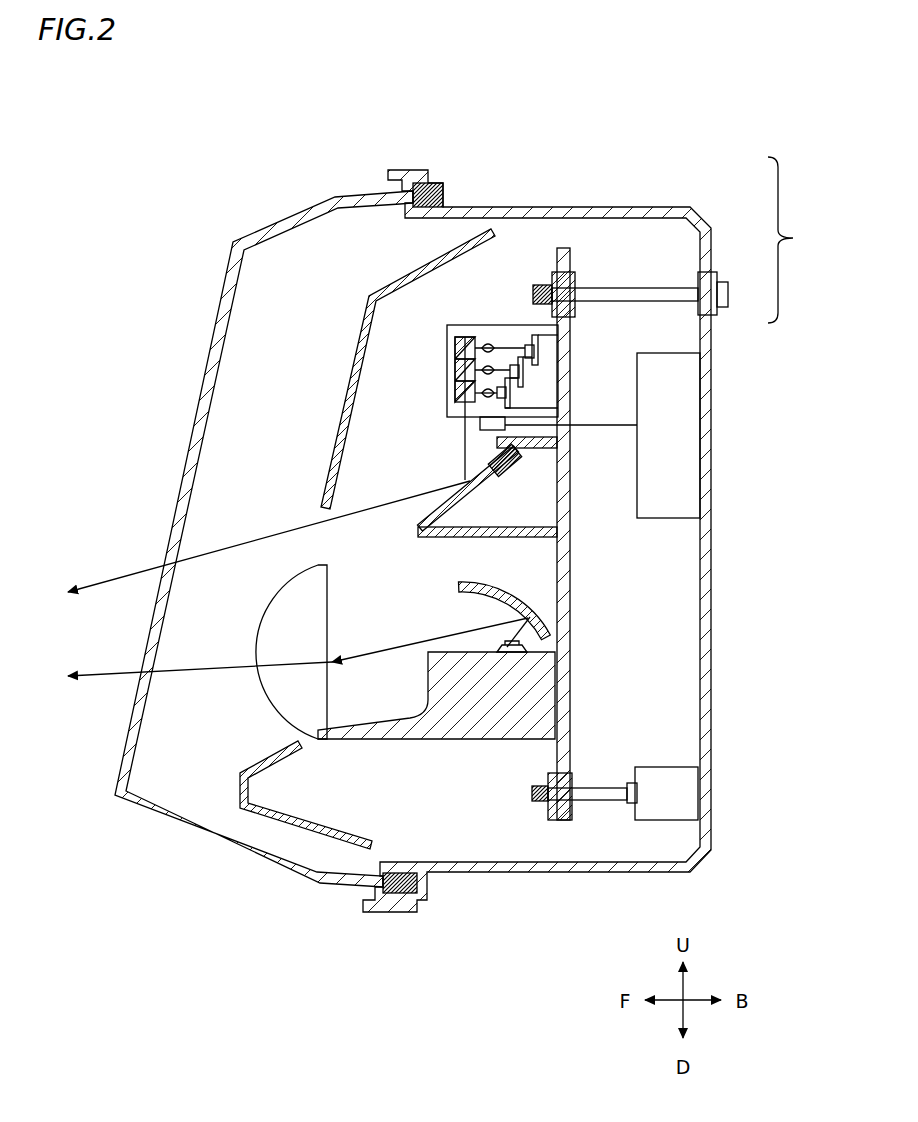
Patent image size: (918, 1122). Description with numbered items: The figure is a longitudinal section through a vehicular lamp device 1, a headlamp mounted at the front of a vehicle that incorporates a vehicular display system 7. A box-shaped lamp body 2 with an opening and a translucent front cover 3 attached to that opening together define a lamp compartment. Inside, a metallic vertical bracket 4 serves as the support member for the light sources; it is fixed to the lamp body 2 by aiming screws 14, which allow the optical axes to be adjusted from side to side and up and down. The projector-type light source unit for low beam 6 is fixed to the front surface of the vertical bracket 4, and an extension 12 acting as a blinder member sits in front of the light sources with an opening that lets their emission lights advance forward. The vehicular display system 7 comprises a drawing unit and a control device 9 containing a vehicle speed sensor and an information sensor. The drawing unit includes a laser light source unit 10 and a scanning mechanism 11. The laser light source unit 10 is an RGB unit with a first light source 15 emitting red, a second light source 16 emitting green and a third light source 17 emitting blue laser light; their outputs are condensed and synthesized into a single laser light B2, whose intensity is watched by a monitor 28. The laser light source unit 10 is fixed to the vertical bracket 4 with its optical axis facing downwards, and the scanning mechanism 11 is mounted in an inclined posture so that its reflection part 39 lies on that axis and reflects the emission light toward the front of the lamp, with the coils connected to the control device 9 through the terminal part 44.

The vehicular lamp device 1 is at (267, 151).
The lamp body 2 is at (498, 870).
The front cover 3 is at (225, 293).
The vertical bracket 4 is at (567, 578).
The light source unit for low beam 6 is at (256, 711).
The vehicular display system 7 is at (792, 240).
The control device 9 is at (692, 377).
The laser light source unit 10 is at (610, 290).
The scanning mechanism 11 is at (585, 401).
The extension 12 is at (357, 357).
The aiming screws 14 is at (632, 287).
The first light source 15 is at (506, 394).
The second light source 16 is at (519, 372).
The third light source 17 is at (534, 351).
The monitor 28 is at (467, 428).
The second rotary body (reflection part) 39 is at (462, 484).
The terminal part 44 is at (505, 477).
The laser light B2 is at (298, 578).